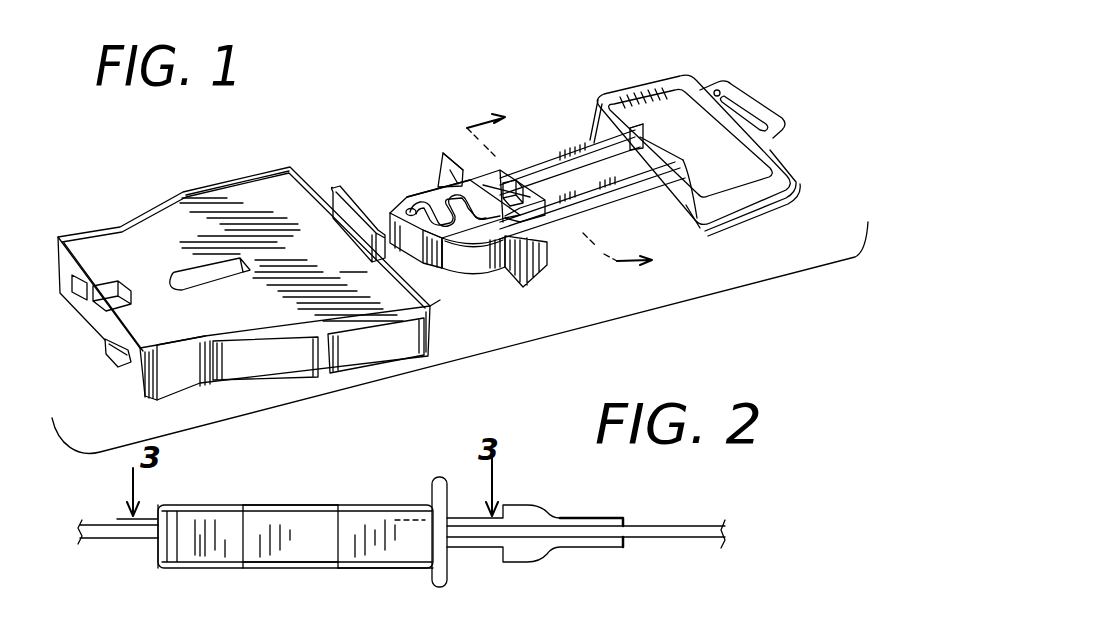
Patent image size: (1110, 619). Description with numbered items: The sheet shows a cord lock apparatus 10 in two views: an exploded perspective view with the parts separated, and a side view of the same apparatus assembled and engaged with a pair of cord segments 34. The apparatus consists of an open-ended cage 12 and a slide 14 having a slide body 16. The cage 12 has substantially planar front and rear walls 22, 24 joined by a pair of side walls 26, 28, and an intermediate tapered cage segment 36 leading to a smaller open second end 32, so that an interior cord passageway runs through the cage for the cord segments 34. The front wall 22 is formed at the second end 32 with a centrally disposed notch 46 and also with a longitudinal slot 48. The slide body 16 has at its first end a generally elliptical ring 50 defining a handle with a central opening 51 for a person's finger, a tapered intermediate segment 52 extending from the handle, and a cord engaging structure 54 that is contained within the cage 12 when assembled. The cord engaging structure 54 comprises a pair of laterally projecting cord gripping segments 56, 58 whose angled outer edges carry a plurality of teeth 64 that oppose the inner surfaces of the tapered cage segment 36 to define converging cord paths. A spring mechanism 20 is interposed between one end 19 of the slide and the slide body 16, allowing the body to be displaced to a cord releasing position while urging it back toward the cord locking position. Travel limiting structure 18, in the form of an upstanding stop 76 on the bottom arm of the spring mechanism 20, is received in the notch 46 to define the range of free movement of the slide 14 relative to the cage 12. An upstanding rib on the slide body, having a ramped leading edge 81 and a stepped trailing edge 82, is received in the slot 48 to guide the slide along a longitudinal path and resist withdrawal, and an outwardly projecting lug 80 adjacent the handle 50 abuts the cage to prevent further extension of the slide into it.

In FIG. 1, the cord lock apparatus 10 is at (403, 100).
In FIG. 1, the cage 12 is at (120, 210).
In FIG. 2, the cage 12 is at (316, 582).
In FIG. 1, the slide 14 is at (537, 82).
In FIG. 2, the slide 14 is at (582, 506).
In FIG. 1, the slide body 16 is at (723, 238).
In FIG. 1, the travel limiting structure 18 is at (356, 176).
In FIG. 1, the one end of the slide 19 is at (405, 262).
In FIG. 1, the spring mechanism 20 is at (423, 190).
In FIG. 2, the front wall 22 is at (297, 505).
In FIG. 2, the rear wall 24 is at (377, 569).
In FIG. 1, the side wall 26 is at (196, 373).
In FIG. 2, the side wall 26 is at (417, 558).
In FIG. 1, the side wall 28 is at (241, 167).
In FIG. 1, the second end 32 is at (112, 360).
In FIG. 2, the cord segments 34 is at (103, 540).
In FIG. 1, the intermediate tapered cage segment 36 is at (283, 371).
In FIG. 2, the intermediate tapered cage segment 36 is at (332, 553).
In FIG. 1, the notch 46 is at (109, 283).
In FIG. 1, the longitudinal slot 48 is at (173, 281).
In FIG. 1, the ring 50 is at (690, 80).
In FIG. 2, the ring 50 is at (625, 518).
In FIG. 1, the central opening 51 is at (742, 152).
In FIG. 1, the tapered intermediate segment 52 is at (590, 134).
In FIG. 1, the cord engaging structure 54 is at (497, 292).
In FIG. 1, the cord gripping segment 56 is at (473, 288).
In FIG. 2, the cord gripping segment 56 is at (152, 565).
In FIG. 1, the cord gripping segment 58 is at (462, 118).
In FIG. 1, the teeth 64 is at (440, 175).
In FIG. 1, the stop 76 is at (404, 212).
In FIG. 1, the lug 80 is at (645, 131).
In FIG. 2, the lug 80 is at (516, 505).
In FIG. 1, the ramped leading edge 81 is at (505, 186).
In FIG. 1, the stepped trailing edge 82 is at (530, 190).